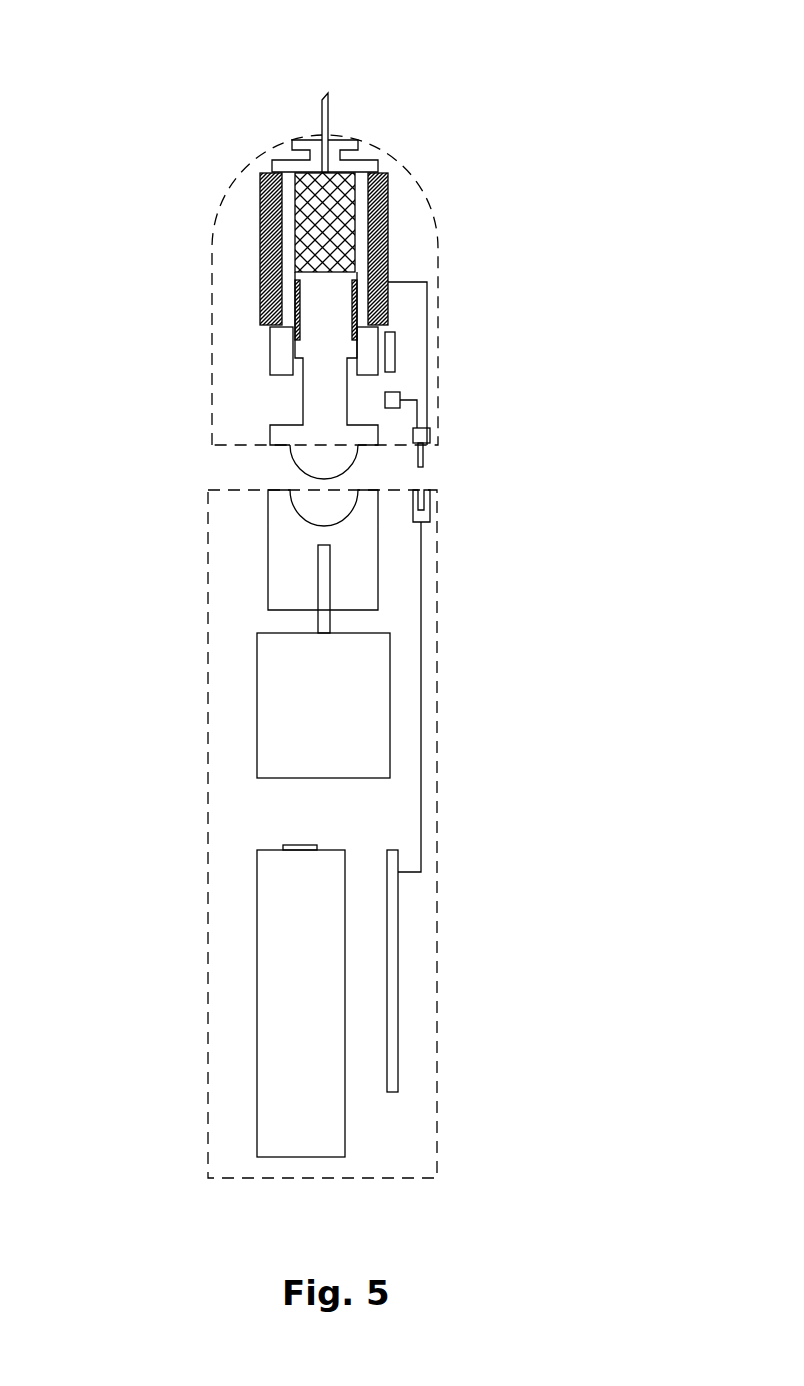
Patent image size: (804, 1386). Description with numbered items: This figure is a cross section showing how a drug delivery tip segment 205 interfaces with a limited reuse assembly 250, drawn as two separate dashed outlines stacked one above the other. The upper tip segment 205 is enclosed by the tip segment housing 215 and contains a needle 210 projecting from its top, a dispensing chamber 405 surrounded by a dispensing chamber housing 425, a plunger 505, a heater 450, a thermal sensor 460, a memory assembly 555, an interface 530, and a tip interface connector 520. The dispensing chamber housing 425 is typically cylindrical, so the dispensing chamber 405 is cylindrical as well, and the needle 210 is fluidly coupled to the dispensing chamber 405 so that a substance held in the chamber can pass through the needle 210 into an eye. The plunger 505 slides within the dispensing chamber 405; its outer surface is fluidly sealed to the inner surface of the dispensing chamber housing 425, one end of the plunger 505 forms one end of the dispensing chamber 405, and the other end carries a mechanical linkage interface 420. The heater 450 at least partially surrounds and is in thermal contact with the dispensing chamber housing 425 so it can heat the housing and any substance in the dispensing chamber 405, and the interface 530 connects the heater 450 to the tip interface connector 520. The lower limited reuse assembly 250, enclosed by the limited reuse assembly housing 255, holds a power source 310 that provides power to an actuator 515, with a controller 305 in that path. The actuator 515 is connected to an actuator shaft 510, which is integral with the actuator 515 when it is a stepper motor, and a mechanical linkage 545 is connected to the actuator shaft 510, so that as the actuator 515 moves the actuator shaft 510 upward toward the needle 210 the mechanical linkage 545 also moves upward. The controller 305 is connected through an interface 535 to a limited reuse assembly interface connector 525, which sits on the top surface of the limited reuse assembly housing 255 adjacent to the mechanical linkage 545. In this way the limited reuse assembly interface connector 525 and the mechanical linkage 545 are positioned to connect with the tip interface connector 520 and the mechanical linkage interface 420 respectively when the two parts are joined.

The tip segment 205 is at (341, 263).
The needle 210 is at (332, 105).
The tip segment housing 215 is at (208, 292).
The limited reuse assembly 250 is at (326, 834).
The limited reuse assembly housing 255 is at (438, 858).
The controller 305 is at (398, 973).
The power source 310 is at (255, 958).
The dispensing chamber 405 is at (333, 205).
The mechanical linkage interface 420 is at (292, 465).
The dispensing chamber housing 425 is at (268, 337).
The heater 450 is at (262, 227).
The thermal sensor 460 is at (398, 353).
The plunger 505 is at (318, 337).
The actuator shaft 510 is at (317, 588).
The actuator 515 is at (257, 712).
The tip interface connector 520 is at (433, 437).
The limited reuse assembly interface connector 525 is at (433, 520).
The interface 530 is at (430, 302).
The interface 535 is at (425, 663).
The mechanical linkage 545 is at (300, 522).
The memory assembly 555 is at (400, 395).